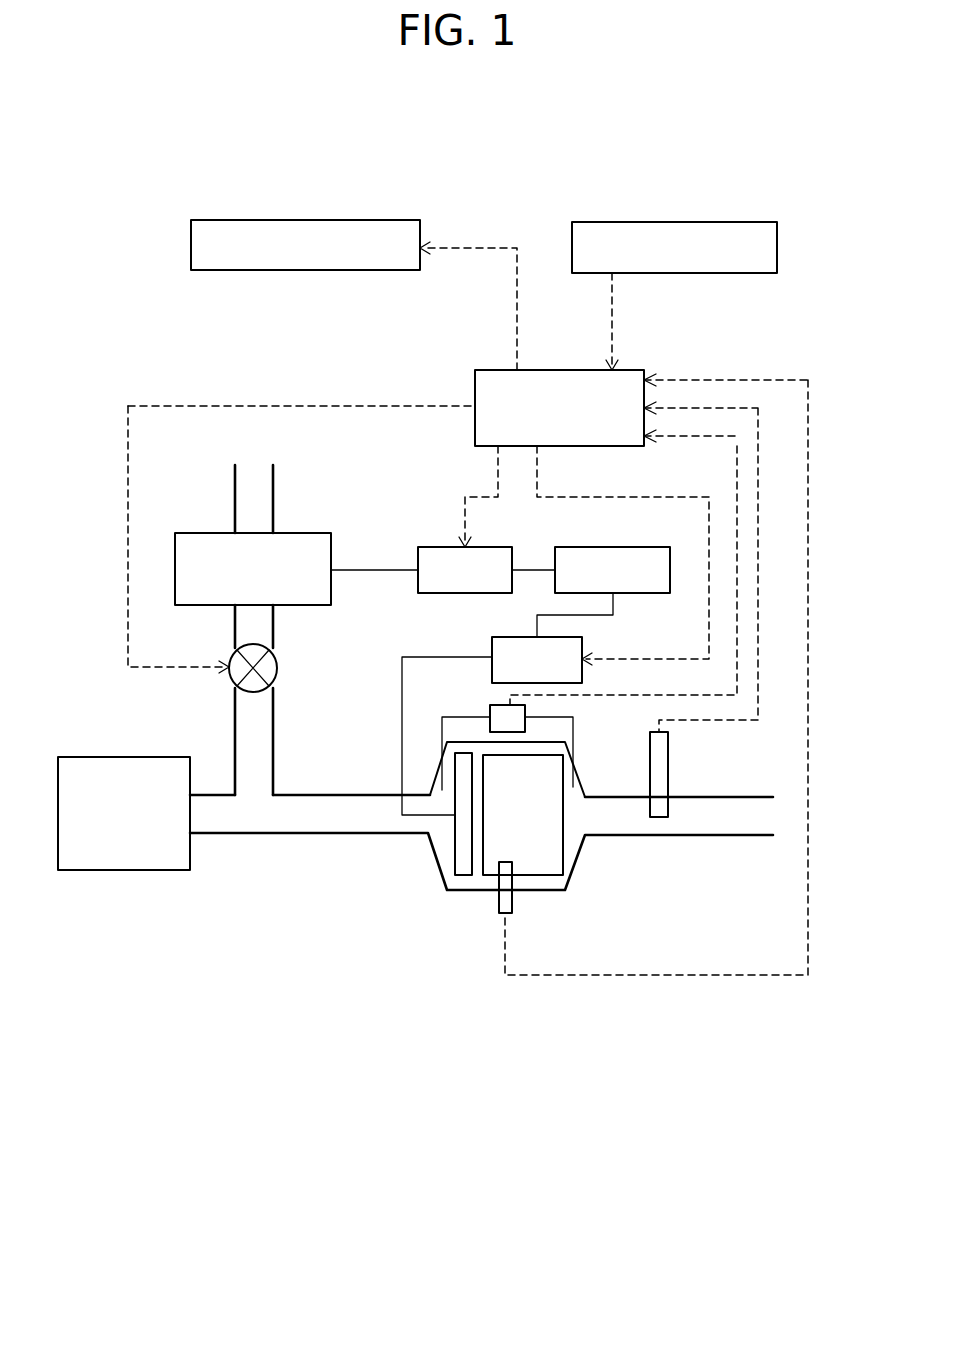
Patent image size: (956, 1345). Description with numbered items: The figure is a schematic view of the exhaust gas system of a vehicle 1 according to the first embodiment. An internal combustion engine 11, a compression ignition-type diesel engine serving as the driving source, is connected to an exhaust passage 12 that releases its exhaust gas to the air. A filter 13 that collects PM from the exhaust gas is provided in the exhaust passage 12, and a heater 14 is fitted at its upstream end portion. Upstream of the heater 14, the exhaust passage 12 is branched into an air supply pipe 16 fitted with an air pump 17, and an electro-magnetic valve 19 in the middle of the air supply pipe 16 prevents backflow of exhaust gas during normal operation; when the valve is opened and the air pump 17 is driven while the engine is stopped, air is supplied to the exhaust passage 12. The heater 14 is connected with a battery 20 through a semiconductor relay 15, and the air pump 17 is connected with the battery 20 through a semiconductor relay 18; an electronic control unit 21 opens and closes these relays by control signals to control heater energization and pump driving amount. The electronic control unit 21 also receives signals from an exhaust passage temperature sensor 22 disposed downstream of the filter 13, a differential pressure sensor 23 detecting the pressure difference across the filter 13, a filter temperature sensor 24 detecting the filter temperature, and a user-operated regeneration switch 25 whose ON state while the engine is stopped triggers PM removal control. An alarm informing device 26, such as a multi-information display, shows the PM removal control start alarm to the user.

The vehicle 1 is at (441, 1203).
The internal combustion engine 11 is at (123, 870).
The exhaust passage 12 is at (258, 833).
The filter 13 is at (545, 880).
The heater 14 is at (462, 885).
The semiconductor relay 15 is at (583, 642).
The air supply pipe 16 is at (277, 717).
The air pump 17 is at (310, 533).
The semiconductor relay 18 is at (437, 547).
The electro-magnetic valve 19 is at (278, 660).
The battery 20 is at (613, 547).
The electronic control unit 21 is at (503, 370).
The exhaust passage temperature sensor 22 is at (668, 765).
The differential pressure sensor 23 is at (488, 708).
The filter temperature sensor 24 is at (497, 902).
The regeneration switch 25 is at (755, 222).
The alarm informing device 26 is at (400, 220).